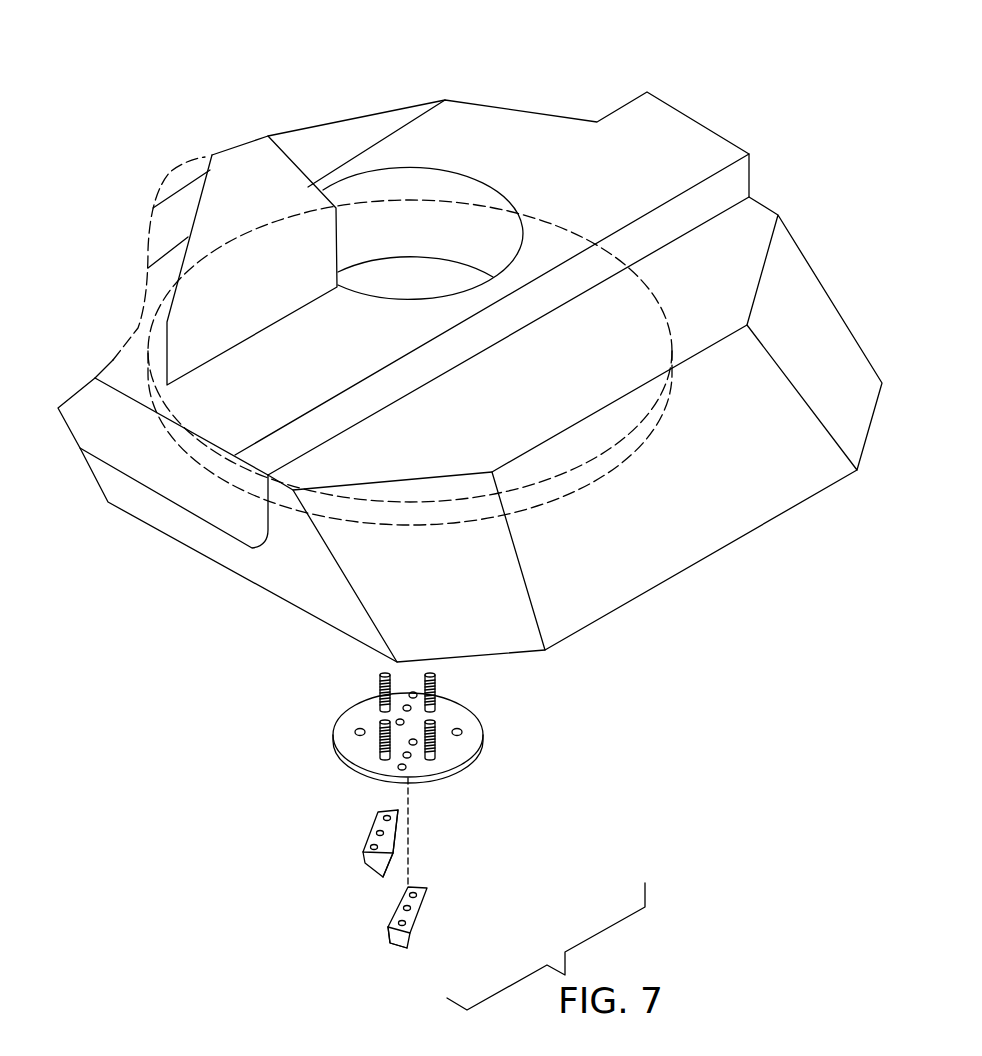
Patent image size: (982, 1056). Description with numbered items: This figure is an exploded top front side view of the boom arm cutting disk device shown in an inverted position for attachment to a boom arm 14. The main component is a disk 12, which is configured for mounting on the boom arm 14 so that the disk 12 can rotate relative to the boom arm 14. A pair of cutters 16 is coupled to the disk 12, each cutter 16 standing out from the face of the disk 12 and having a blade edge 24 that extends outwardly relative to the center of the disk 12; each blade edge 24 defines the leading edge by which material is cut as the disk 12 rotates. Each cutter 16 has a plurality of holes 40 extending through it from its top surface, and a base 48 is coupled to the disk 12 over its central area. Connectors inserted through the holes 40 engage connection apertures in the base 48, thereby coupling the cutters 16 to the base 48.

The disk 12 is at (547, 223).
The boom arm 14 is at (457, 120).
The cutter 16 is at (372, 863).
The blade edge 24 is at (400, 852).
The holes 40 is at (375, 822).
The base 48 is at (472, 725).